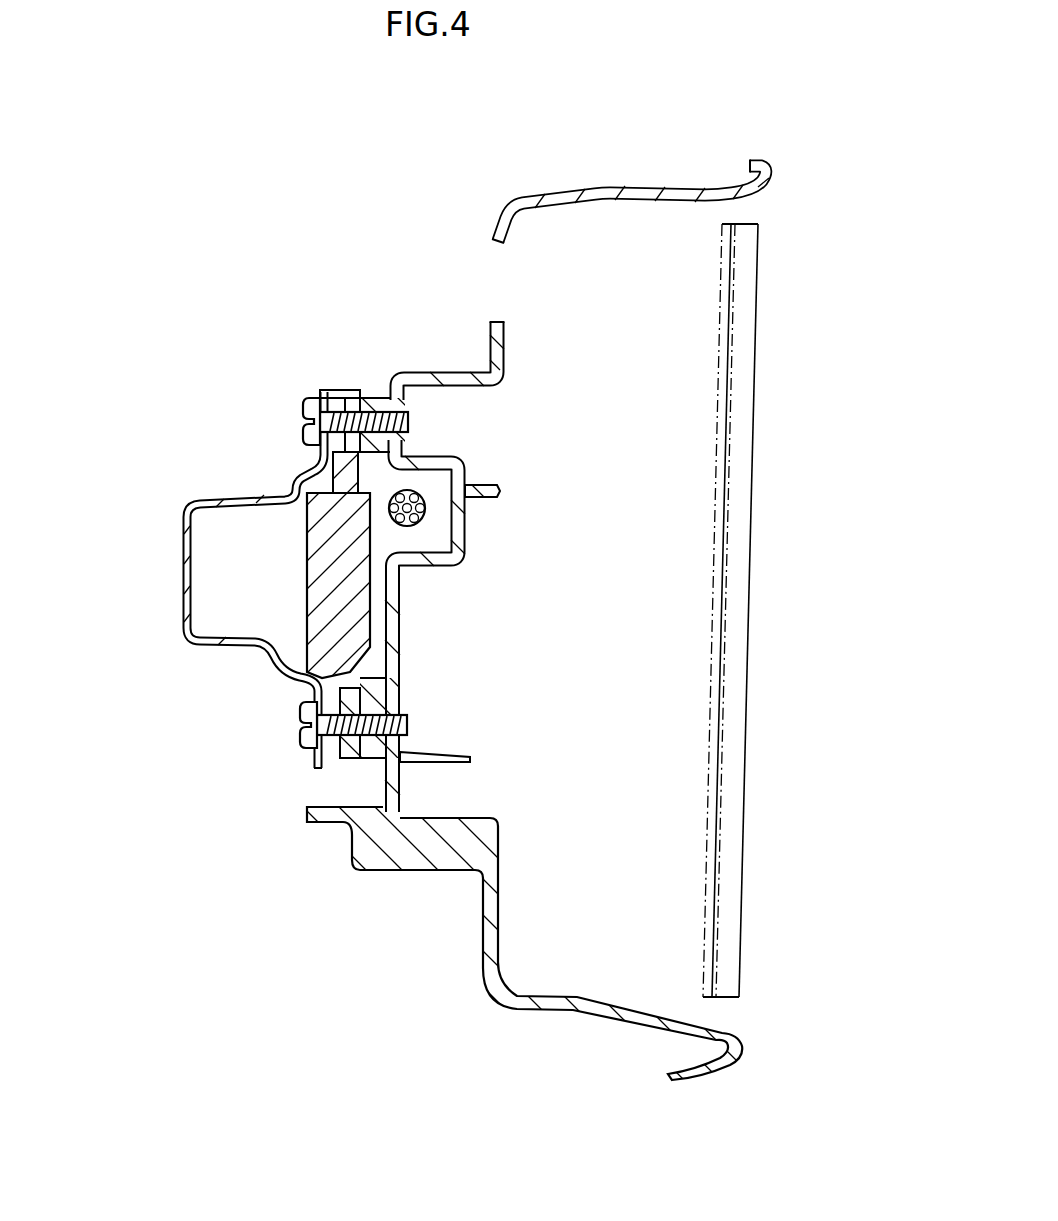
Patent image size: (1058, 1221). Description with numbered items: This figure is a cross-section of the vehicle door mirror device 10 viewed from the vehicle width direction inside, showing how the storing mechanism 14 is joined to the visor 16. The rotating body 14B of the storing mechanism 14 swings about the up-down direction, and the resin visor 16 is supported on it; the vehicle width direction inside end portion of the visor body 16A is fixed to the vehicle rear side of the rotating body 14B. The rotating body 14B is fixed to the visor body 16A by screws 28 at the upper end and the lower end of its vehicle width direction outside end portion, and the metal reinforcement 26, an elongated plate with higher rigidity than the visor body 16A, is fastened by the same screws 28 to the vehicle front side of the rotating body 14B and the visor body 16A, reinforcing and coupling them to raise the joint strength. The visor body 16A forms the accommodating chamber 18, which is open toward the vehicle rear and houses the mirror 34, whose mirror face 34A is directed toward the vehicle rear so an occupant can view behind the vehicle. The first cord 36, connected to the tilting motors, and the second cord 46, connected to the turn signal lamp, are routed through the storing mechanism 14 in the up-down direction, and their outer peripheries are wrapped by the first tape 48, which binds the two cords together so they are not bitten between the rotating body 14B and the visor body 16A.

The vehicle seat 10 is at (292, 149).
The storing mechanism 14 is at (307, 588).
The rotating body 14B is at (217, 565).
The visor 16 is at (629, 204).
The visor body 16A is at (651, 187).
The accommodating chamber 18 is at (758, 203).
The reinforcement 26 is at (183, 565).
The screws 28 is at (303, 410).
The mirror 34 is at (767, 610).
The mirror face 34A is at (722, 746).
The first cord 36 is at (430, 497).
The second cord 46 is at (404, 527).
The first tape 48 is at (461, 550).